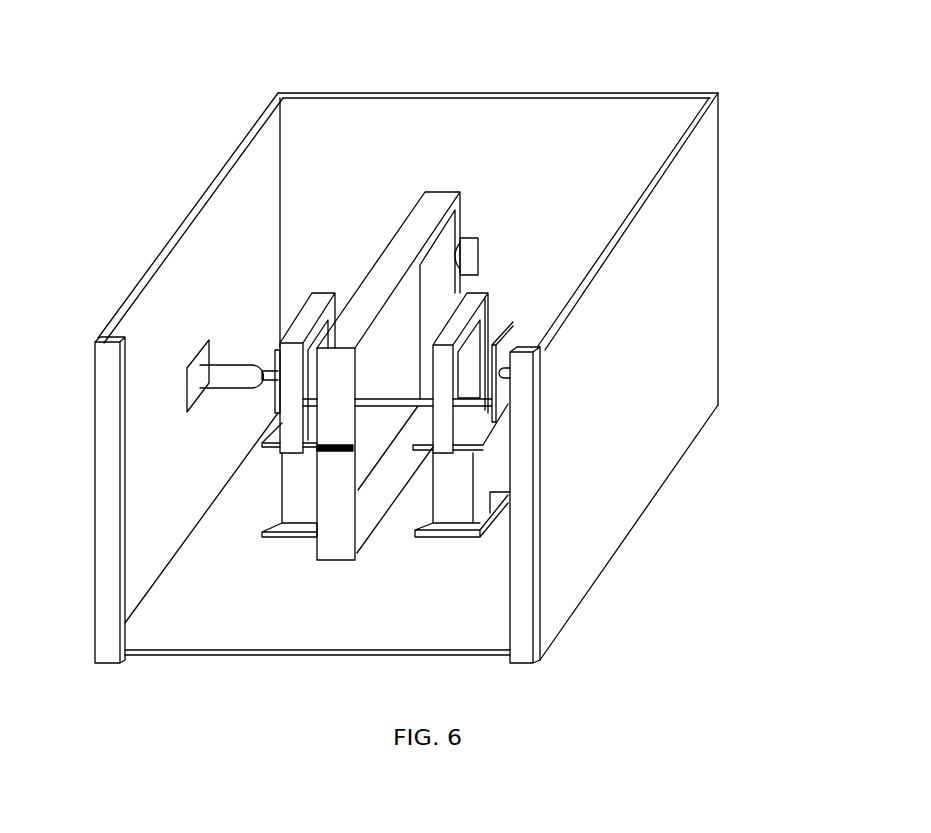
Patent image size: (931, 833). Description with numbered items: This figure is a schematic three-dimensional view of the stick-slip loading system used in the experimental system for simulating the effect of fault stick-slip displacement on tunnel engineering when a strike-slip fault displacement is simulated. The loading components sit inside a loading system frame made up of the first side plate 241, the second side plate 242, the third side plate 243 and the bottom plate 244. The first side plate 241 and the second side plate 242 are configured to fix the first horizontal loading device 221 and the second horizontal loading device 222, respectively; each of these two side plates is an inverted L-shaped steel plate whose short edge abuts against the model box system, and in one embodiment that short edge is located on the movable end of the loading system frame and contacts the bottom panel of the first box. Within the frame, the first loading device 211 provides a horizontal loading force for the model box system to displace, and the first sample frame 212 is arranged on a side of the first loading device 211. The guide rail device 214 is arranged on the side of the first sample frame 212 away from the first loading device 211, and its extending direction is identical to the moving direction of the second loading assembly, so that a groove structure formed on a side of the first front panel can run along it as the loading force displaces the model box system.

The first loading device 211 is at (478, 252).
The first sample frame 212 is at (378, 287).
The guide rail device 214 is at (332, 442).
The first horizontal loading device 221 is at (516, 370).
The second horizontal loading device 222 is at (198, 380).
The first side plate 241 is at (617, 388).
The second side plate 242 is at (187, 295).
The third side plate 243 is at (545, 178).
The bottom plate 244 is at (192, 602).